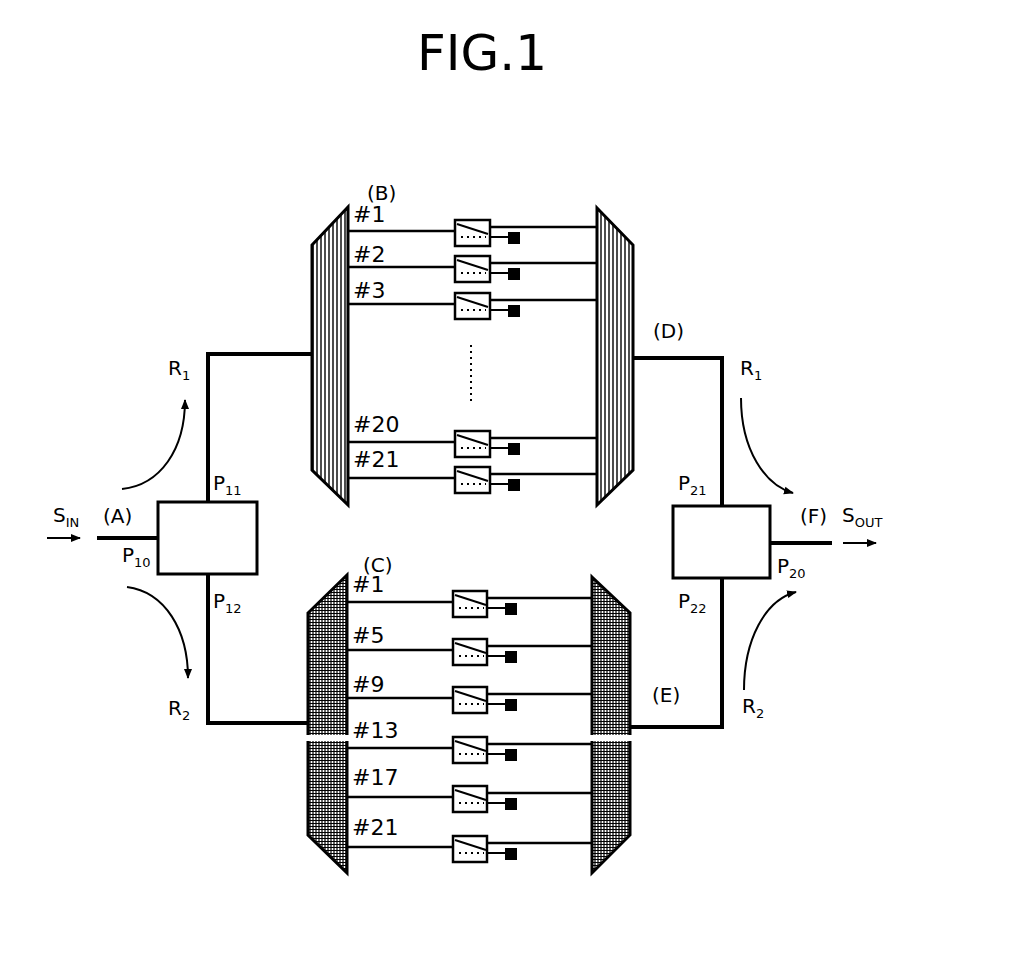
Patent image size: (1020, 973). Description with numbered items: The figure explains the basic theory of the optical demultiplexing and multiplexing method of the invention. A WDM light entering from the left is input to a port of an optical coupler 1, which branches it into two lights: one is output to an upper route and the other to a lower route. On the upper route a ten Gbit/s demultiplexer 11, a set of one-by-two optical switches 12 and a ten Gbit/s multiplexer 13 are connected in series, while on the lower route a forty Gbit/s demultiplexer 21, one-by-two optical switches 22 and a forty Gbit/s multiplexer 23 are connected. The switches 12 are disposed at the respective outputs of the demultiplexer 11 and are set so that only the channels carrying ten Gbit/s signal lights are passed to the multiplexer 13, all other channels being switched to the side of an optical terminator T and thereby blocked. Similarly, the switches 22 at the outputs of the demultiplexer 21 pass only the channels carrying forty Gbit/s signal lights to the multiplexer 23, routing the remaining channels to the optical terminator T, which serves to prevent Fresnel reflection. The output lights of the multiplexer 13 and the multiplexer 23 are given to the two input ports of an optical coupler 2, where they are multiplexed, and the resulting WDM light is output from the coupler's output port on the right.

The optical coupler 1 is at (257, 533).
The optical coupler 2 is at (673, 533).
The 10 Gbit/s demultiplexer 11 is at (312, 290).
The 1×2 optical switches 12 is at (460, 210).
The 10 Gbit/s multiplexer 13 is at (633, 268).
The 40 Gbit/s demultiplexer 21 is at (308, 672).
The 1×2 optical switches 22 is at (455, 595).
The 40 Gbit/s multiplexer 23 is at (630, 662).
The optical terminator T is at (521, 501).